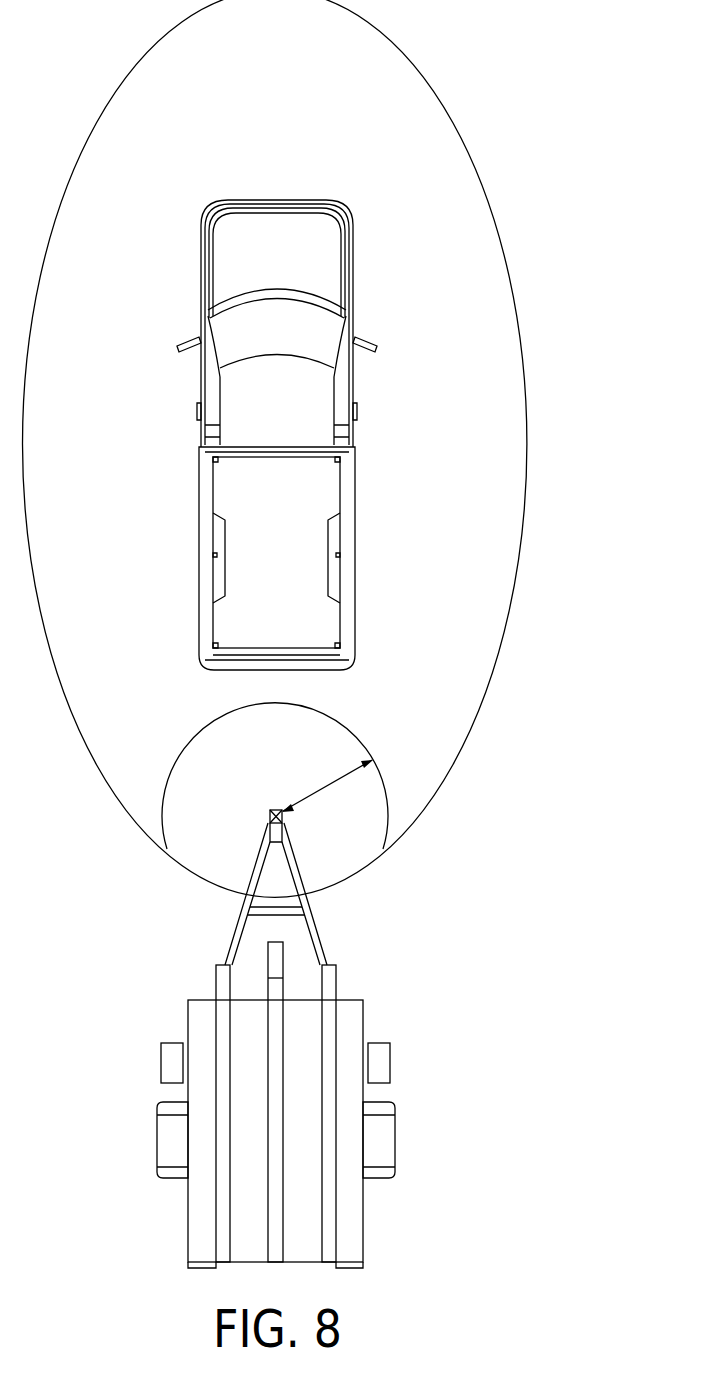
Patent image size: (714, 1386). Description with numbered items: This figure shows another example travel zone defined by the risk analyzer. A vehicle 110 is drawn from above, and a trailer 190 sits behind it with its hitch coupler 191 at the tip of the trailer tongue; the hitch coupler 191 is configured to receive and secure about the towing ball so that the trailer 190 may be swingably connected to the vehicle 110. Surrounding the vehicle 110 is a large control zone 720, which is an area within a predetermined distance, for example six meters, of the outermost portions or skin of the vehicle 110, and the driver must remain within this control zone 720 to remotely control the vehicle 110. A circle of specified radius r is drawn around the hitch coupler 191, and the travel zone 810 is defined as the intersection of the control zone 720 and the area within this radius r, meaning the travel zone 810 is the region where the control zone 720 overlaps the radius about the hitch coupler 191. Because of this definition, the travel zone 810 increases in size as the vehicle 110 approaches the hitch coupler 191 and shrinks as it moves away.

The vehicle 110 is at (362, 233).
The control zone 720 is at (530, 431).
The travel zone 810 is at (396, 804).
The hitch coupler 191 is at (270, 818).
The trailer 190 is at (421, 1117).